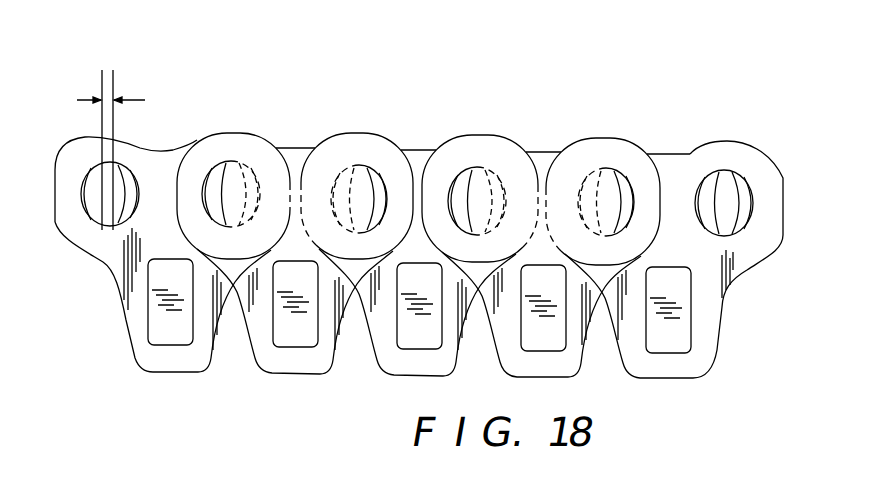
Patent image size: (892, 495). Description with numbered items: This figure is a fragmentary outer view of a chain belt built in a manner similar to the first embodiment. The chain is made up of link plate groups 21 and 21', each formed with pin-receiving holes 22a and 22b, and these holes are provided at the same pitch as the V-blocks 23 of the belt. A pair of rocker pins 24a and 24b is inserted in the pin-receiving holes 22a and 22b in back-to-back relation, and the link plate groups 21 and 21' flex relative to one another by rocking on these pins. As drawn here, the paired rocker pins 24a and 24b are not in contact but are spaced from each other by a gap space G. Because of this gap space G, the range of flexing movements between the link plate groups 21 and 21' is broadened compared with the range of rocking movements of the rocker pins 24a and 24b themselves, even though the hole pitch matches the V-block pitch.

The link plate group 21 is at (357, 184).
The link plate group 21' is at (224, 169).
The pin-receiving hole 22a is at (108, 222).
The pin-receiving hole 22b is at (105, 256).
The V-block 23 is at (172, 332).
The rocker pin 24a is at (102, 222).
The rocker pin 24b is at (136, 374).
The gap space G is at (109, 70).